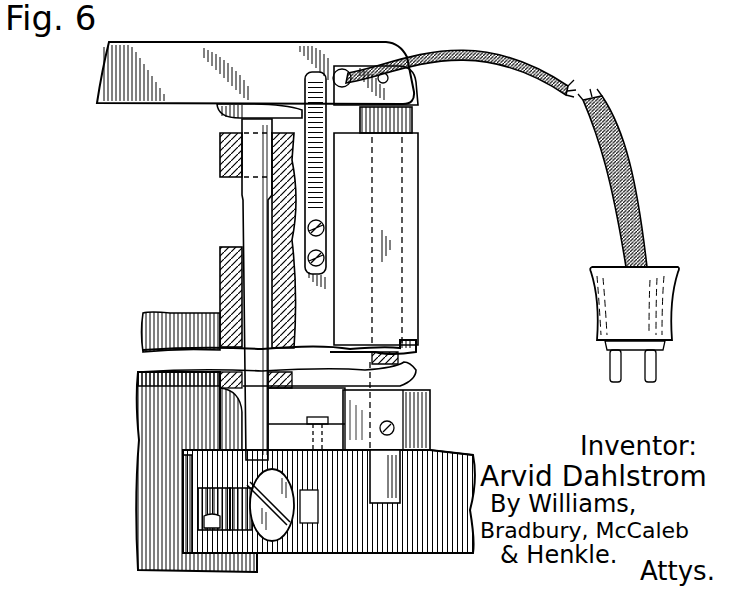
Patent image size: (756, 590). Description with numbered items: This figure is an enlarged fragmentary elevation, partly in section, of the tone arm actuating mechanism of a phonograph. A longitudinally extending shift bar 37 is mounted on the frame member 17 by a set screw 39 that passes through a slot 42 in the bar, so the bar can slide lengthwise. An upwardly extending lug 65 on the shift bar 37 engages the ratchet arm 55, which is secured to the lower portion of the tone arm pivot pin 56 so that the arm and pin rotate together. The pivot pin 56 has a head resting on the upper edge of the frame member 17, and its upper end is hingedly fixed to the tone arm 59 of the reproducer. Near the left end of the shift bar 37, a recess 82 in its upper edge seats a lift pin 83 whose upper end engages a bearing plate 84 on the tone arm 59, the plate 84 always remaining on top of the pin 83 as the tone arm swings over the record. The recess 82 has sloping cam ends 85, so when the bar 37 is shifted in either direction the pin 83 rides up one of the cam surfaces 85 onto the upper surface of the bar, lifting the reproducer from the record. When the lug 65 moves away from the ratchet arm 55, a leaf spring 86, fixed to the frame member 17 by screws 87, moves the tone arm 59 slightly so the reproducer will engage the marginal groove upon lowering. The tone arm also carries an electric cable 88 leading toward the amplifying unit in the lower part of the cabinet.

The frame member 17 is at (410, 262).
The shift bar 37 is at (383, 487).
The set screw 39 is at (250, 506).
The slot 42 is at (212, 520).
The ratchet arm 55 is at (285, 430).
The tone arm pivot pin 56 is at (425, 507).
The tone arm 59 is at (252, 52).
The upwardly extending lug 65 is at (320, 423).
The recess 82 is at (248, 488).
The lift pin 83 is at (253, 268).
The bearing plate 84 is at (244, 119).
The sloping cam ends 85 is at (268, 462).
The leaf spring 86 is at (322, 184).
The screws 87 is at (325, 258).
The electric cable 88 is at (545, 47).